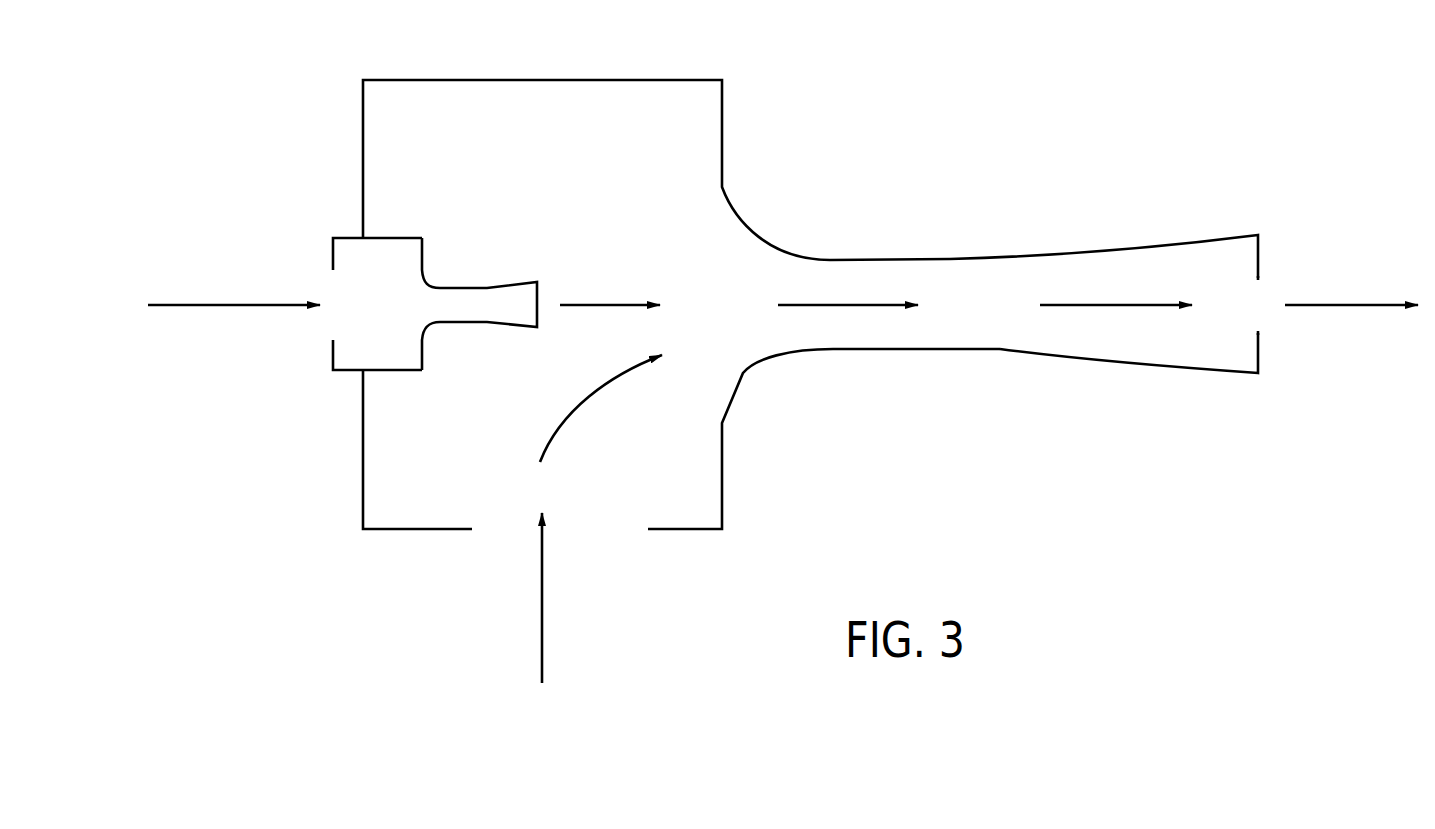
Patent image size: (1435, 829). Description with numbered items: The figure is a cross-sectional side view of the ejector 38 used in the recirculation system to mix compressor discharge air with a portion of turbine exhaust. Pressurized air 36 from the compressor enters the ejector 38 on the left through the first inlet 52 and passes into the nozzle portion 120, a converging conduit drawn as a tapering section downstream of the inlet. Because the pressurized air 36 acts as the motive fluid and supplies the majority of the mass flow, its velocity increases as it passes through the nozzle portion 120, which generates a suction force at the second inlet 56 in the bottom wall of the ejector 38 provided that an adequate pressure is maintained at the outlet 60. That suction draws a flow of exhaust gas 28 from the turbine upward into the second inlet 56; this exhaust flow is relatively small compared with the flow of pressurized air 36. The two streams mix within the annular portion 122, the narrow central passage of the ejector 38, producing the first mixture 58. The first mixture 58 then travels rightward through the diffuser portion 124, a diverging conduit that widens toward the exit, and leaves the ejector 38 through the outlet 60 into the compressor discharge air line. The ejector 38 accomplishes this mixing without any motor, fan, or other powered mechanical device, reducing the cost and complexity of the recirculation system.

The ejector 38 is at (688, 73).
The pressurized air 36 is at (227, 302).
The first inlet 52 is at (335, 323).
The nozzle portion 120 is at (497, 298).
The annular portion 122 is at (845, 268).
The diffuser portion 124 is at (1190, 253).
The outlet 60 is at (1257, 290).
The first mixture 58 is at (1350, 305).
The exhaust gas 28 is at (542, 607).
The second inlet 56 is at (613, 529).